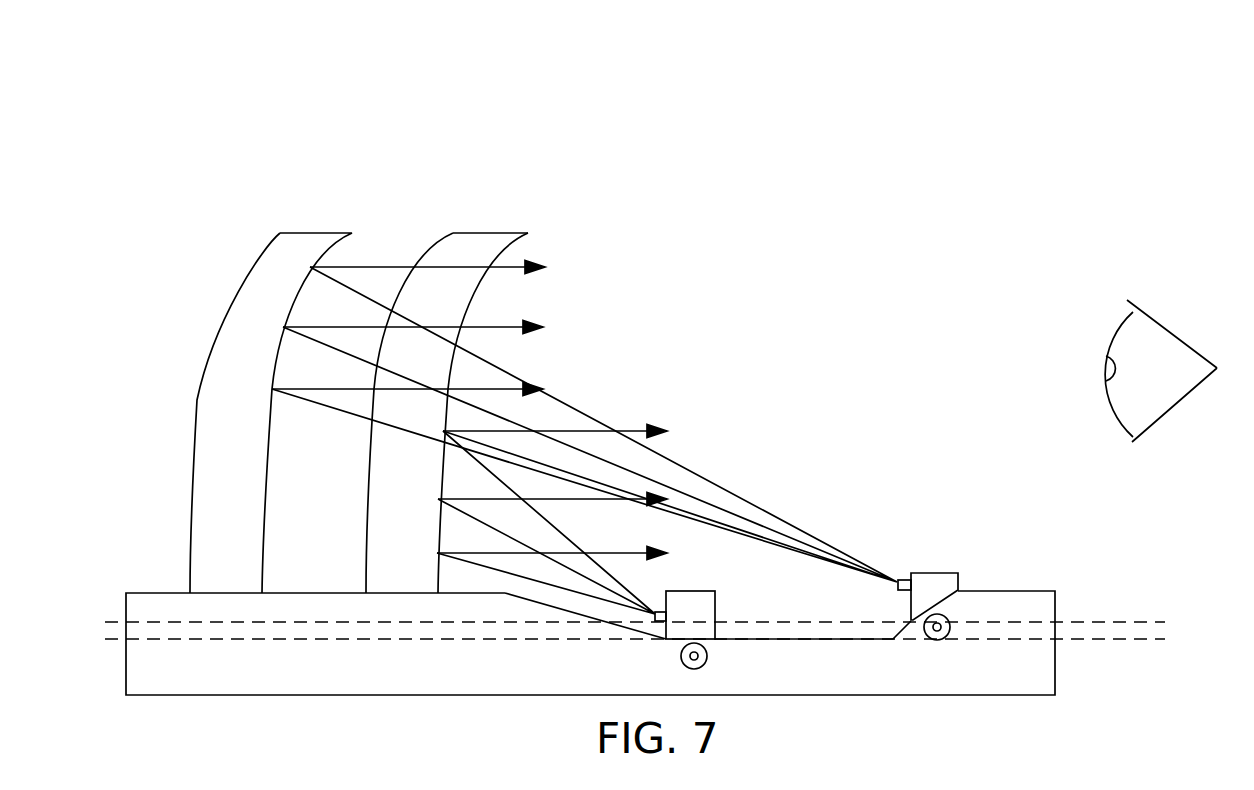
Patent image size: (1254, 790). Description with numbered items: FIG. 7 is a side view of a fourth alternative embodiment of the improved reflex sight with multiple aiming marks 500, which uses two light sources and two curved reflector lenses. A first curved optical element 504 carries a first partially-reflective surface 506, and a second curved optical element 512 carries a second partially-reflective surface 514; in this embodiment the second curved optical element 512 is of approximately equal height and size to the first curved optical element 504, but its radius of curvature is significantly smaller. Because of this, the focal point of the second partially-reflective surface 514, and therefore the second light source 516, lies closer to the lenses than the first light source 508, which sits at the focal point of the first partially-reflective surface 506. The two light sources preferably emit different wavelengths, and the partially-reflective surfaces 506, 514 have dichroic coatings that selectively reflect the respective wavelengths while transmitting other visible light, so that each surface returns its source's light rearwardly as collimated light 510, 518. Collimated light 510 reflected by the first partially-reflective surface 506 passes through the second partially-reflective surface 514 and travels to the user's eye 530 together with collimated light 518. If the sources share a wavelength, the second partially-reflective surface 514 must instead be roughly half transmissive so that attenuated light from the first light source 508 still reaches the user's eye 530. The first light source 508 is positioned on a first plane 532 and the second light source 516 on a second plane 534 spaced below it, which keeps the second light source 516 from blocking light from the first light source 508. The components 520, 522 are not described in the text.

The reflex sight with multiple aiming marks 500 is at (840, 117).
The first curved optical element 504 is at (315, 233).
The first partially-reflective surface 506 is at (265, 478).
The first light source 508 is at (940, 573).
The collimated light 510 is at (383, 267).
The second curved optical element 512 is at (495, 233).
The second partially-reflective surface 514 is at (472, 296).
The second light source 516 is at (698, 591).
The collimated light 518 is at (639, 428).
The roller 520 is at (707, 658).
The roller 522 is at (948, 617).
The user's eye 530 is at (1150, 313).
The first plane 532 is at (1130, 620).
The second plane 534 is at (1130, 641).